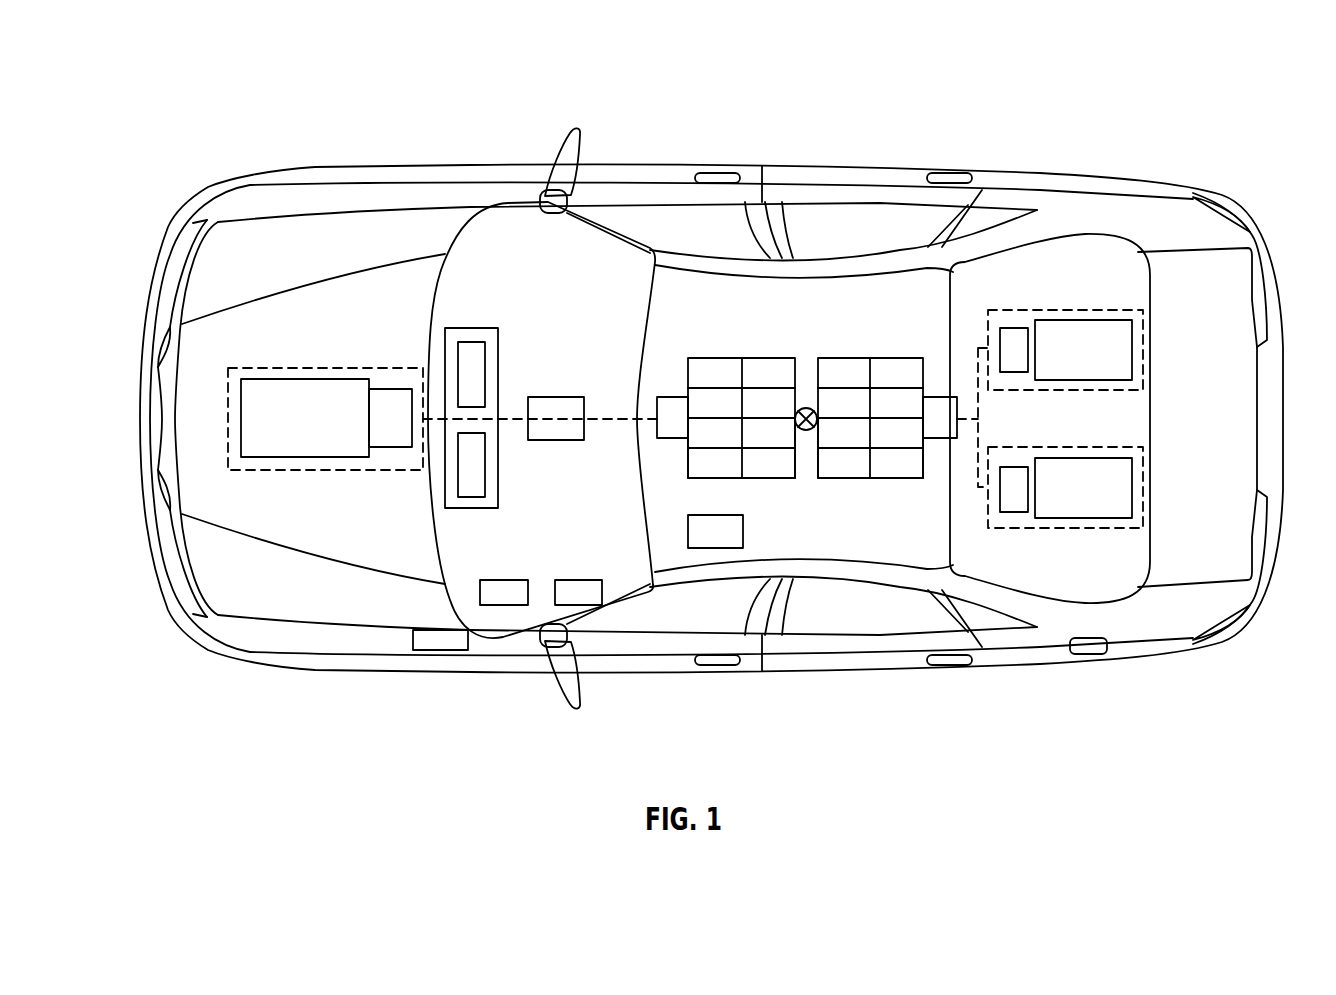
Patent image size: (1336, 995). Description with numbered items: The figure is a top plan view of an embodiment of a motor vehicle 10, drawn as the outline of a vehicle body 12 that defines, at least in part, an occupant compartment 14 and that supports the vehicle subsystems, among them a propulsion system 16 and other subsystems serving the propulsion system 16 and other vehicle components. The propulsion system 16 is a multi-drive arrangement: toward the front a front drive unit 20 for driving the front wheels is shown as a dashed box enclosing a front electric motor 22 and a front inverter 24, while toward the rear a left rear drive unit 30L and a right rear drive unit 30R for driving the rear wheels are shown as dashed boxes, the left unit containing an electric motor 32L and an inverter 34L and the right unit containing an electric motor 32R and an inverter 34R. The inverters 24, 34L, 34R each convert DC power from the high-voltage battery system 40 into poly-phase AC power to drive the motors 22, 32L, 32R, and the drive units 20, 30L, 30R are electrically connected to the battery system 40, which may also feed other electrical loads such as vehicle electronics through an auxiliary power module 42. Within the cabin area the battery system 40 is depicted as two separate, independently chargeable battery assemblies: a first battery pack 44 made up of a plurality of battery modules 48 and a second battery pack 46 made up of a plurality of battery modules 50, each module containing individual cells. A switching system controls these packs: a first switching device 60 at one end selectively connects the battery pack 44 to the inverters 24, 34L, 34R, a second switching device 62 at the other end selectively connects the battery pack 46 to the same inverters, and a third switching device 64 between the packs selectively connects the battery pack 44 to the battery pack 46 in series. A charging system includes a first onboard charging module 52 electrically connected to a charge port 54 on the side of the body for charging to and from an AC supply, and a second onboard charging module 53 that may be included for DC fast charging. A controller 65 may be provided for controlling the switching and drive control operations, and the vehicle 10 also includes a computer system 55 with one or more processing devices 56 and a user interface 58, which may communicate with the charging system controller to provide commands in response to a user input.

The motor vehicle 10 is at (190, 98).
The vehicle body 12 is at (771, 158).
The occupant compartment 14 is at (830, 572).
The propulsion system 16 is at (292, 533).
The front drive unit 20 is at (321, 385).
The front electric motor 22 is at (343, 379).
The front inverter 24 is at (388, 448).
The right rear drive unit 30R is at (1109, 324).
The left rear drive unit 30L is at (1108, 596).
The electric motor 32R is at (1083, 320).
The electric motor 32L is at (1078, 518).
The inverter 34R is at (1012, 328).
The inverter 34L is at (1017, 512).
The battery system 40 is at (801, 518).
The auxiliary power module 42 is at (717, 515).
The first battery pack 44 is at (773, 480).
The second battery pack 46 is at (847, 480).
The battery modules 48 is at (765, 378).
The battery modules 50 is at (835, 370).
The first onboard charging module 52 is at (580, 580).
The second onboard charging module 53 is at (503, 580).
The charge port 54 is at (443, 630).
The computer system 55 is at (468, 292).
The processing devices 56 is at (487, 352).
The user interface 58 is at (487, 477).
The first switching device 60 is at (677, 407).
The second switching device 62 is at (945, 397).
The third switching device 64 is at (807, 430).
The controller 65 is at (555, 397).